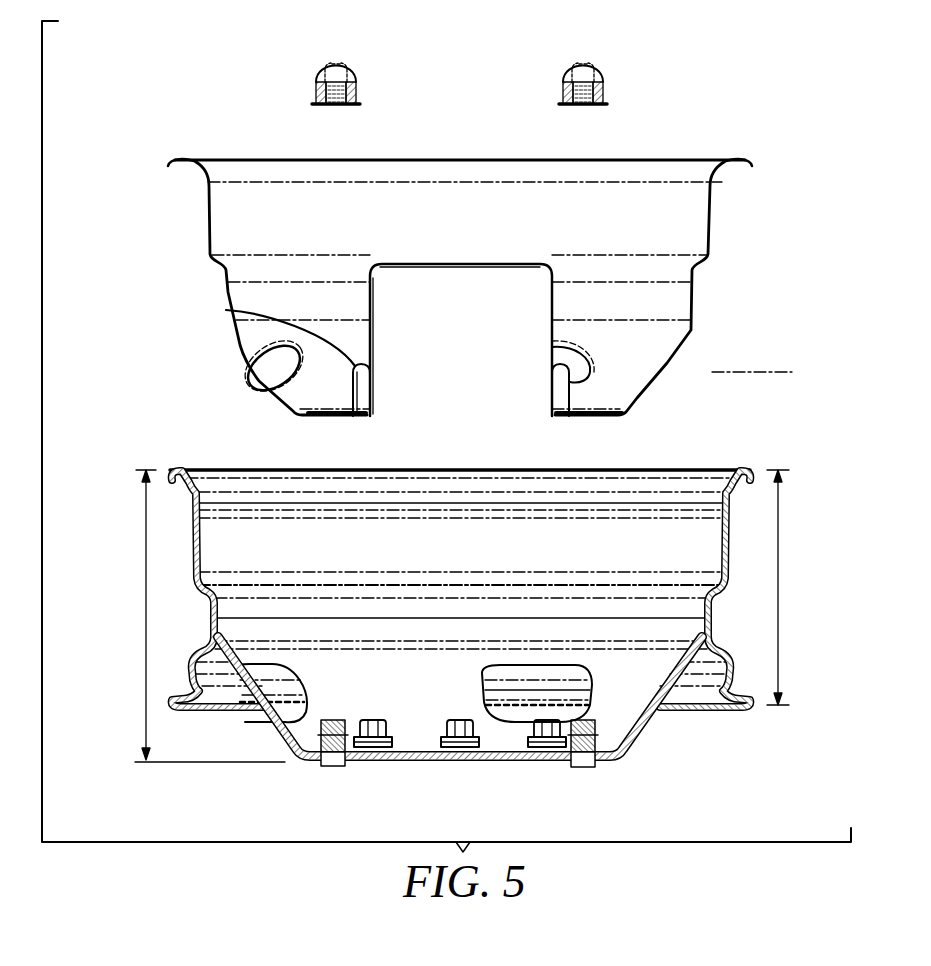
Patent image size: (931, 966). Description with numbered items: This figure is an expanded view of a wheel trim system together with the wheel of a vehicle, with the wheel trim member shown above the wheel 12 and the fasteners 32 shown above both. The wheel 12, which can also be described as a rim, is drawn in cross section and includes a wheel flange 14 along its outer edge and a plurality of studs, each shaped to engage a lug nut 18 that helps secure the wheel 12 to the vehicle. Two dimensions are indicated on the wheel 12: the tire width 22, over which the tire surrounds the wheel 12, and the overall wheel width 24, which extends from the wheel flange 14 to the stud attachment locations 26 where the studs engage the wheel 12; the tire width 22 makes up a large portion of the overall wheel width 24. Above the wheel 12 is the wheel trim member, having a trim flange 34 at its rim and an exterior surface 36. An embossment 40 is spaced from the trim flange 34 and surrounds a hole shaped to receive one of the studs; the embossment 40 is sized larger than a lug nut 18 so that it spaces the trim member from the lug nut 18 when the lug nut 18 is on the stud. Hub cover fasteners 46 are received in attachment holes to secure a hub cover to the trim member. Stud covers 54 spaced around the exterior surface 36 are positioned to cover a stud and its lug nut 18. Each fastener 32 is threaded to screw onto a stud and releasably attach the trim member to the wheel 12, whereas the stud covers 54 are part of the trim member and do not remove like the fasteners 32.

The wheel 12 is at (450, 609).
The wheel flange 14 is at (476, 606).
The lug nut 18 is at (598, 727).
The tire width 22 is at (778, 572).
The overall wheel width 24 is at (146, 570).
The stud attachment location 26 is at (585, 766).
The fastener 32 is at (345, 58).
The trim flange 34 is at (485, 287).
The exterior surface 36 is at (225, 222).
The embossment 40 is at (315, 416).
The hub cover fastener 46 is at (397, 263).
The stud cover 54 is at (250, 312).